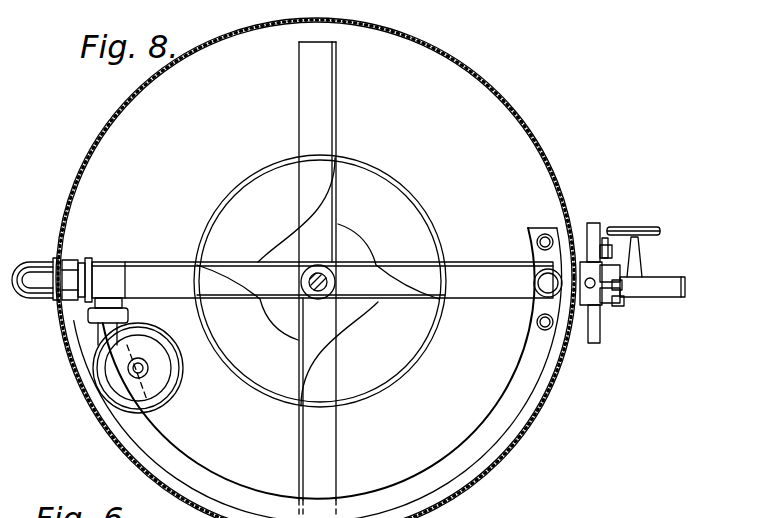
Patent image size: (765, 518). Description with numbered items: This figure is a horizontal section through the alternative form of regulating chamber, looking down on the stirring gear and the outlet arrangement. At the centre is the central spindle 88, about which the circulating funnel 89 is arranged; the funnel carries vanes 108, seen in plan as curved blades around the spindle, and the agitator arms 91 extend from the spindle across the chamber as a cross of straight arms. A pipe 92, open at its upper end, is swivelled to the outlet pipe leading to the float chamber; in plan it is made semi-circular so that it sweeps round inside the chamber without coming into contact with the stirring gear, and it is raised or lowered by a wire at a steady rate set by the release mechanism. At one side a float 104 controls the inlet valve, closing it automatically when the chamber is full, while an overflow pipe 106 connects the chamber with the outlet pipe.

The central spindle 88 is at (311, 272).
The circulating funnel 89 is at (398, 362).
The agitator arms 91 is at (325, 98).
The pipe 92 is at (219, 475).
The float 104 is at (163, 380).
The overflow pipe 106 is at (30, 283).
The vanes 108 is at (245, 282).